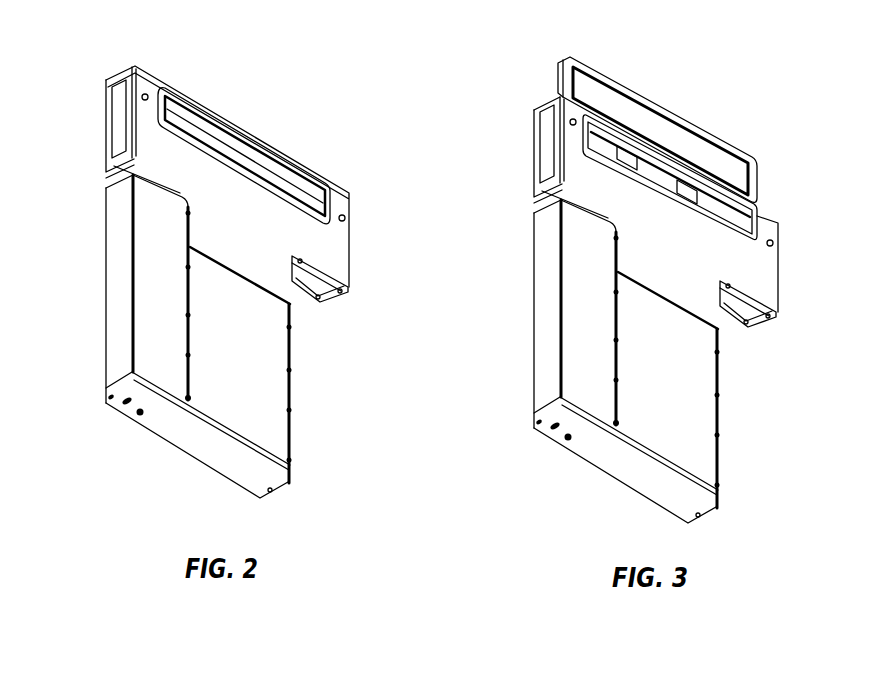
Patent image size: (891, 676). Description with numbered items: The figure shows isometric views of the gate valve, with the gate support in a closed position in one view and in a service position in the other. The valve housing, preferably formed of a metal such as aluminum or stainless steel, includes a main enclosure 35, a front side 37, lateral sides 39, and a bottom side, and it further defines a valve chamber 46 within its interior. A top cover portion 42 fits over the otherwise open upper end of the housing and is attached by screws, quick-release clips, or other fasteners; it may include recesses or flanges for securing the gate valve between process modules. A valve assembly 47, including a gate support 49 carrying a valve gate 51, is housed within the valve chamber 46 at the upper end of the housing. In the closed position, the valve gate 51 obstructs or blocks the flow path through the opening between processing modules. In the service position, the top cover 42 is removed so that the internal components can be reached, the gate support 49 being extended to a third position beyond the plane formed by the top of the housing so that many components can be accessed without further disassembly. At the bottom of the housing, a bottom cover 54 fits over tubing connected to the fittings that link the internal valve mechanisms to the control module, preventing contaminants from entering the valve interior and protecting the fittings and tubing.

In FIG. 2, the top cover portion 42 is at (150, 73).
In FIG. 2, the main enclosure 35 is at (338, 258).
In FIG. 2, the lateral sides 39 is at (117, 283).
In FIG. 2, the front side 37 is at (266, 378).
In FIG. 2, the bottom cover 54 is at (165, 433).
In FIG. 3, the gate support 49 is at (610, 78).
In FIG. 3, the valve gate 51 is at (670, 137).
In FIG. 3, the valve assembly 47 is at (760, 162).
In FIG. 3, the valve chamber 46 is at (763, 217).